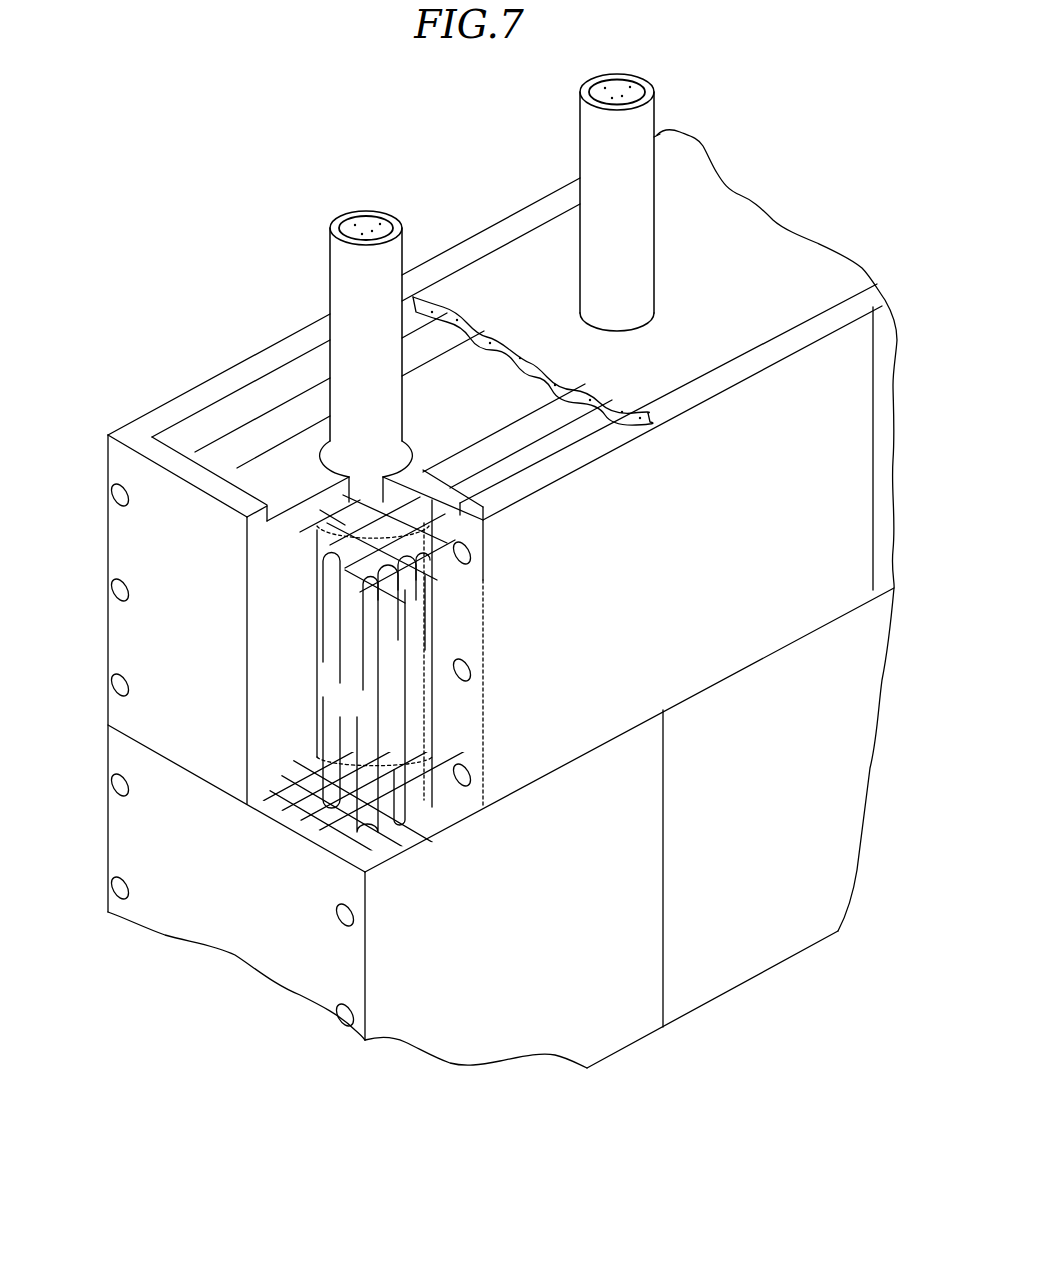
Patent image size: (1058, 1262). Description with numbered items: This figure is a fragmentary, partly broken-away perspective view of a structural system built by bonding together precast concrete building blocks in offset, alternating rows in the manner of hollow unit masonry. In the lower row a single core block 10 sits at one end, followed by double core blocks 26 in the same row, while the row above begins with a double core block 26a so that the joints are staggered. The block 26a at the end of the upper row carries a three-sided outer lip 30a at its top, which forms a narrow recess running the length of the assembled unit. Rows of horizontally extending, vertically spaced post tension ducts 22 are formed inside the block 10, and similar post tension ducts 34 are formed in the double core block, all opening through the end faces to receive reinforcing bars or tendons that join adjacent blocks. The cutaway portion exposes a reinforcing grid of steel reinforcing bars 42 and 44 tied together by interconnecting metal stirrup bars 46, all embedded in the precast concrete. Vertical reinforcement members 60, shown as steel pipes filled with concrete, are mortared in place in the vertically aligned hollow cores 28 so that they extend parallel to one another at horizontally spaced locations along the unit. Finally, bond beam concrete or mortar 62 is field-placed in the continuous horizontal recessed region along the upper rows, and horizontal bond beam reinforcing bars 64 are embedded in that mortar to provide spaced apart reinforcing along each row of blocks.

The block 10 is at (555, 1033).
The post tension ducts 22 is at (118, 889).
The double core building block 26 is at (747, 951).
The double core block 26a is at (160, 627).
The hollow core 28 is at (413, 443).
The three-sided outer lip 30a is at (285, 348).
The post tension ducts 34 is at (118, 590).
The steel reinforcing bars 42 is at (490, 505).
The steel reinforcing bars 44 is at (303, 530).
The interconnecting metal stirrup bars 46 is at (433, 593).
The vertical reinforcement members 60 is at (342, 258).
The bond beam concrete or mortar 62 is at (495, 267).
The horizontal bond beam reinforcing bars 64 is at (253, 452).